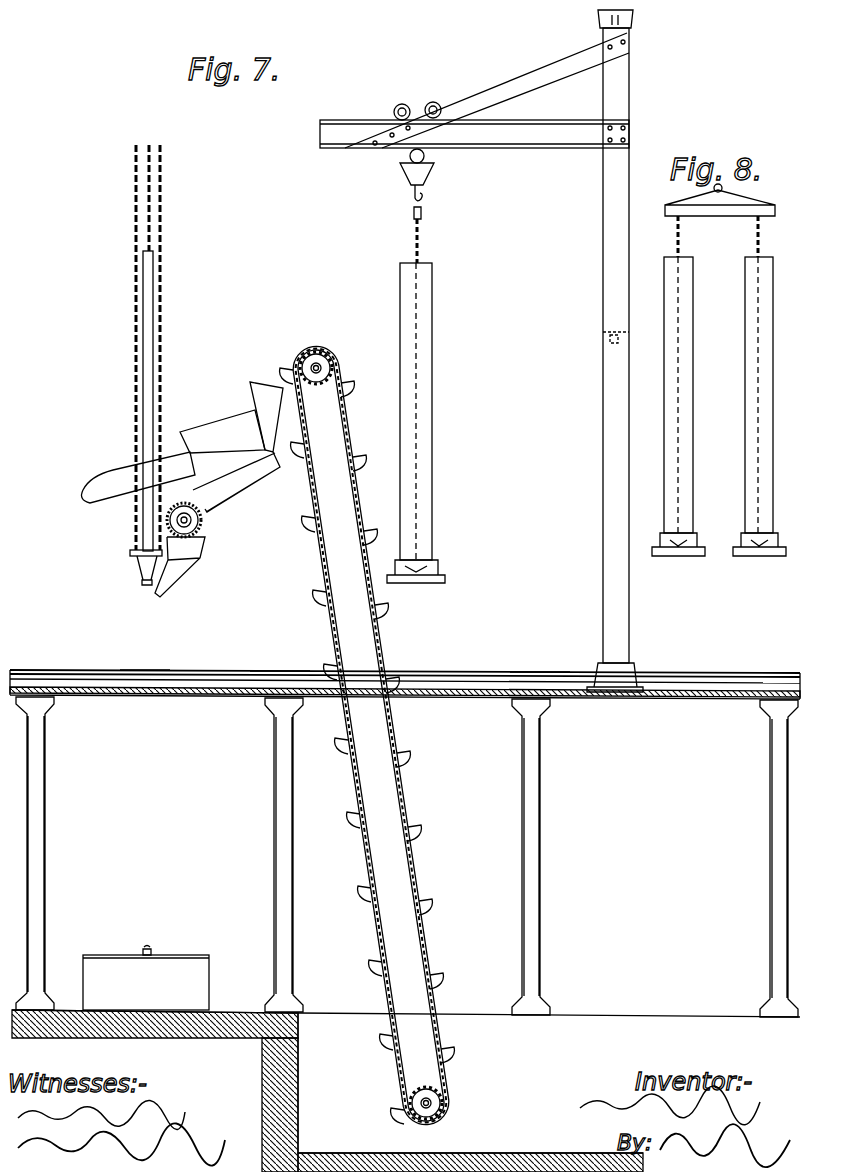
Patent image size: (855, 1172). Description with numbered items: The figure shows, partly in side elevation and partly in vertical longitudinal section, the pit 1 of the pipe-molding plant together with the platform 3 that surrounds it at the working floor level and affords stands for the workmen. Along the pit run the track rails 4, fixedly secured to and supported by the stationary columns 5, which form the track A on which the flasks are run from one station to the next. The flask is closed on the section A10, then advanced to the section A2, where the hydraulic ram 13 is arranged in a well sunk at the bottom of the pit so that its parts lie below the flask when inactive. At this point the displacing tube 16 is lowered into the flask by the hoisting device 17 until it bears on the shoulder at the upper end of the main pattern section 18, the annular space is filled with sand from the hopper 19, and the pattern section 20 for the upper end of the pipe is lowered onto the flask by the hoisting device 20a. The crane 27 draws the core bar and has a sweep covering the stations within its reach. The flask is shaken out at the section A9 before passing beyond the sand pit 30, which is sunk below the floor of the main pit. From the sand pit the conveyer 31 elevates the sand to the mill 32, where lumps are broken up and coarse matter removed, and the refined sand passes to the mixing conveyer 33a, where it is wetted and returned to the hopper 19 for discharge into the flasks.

The pit 1 is at (70, 990).
The platform 3 is at (163, 695).
The track rails 4 is at (245, 686).
The stationary columns 5 is at (44, 812).
The hydraulic ram 13 is at (199, 977).
The displacing tube 16 is at (152, 340).
The hoisting device 17 is at (151, 172).
The main pattern section 18 is at (152, 950).
The hopper 19 is at (180, 566).
The pattern section 20 is at (137, 563).
The hoisting device 20a is at (133, 392).
The crane 27 is at (608, 296).
The sand pit 30 is at (614, 1040).
The conveyer 31 is at (405, 803).
The mill 32 is at (217, 430).
The mixing conveyer 33a is at (201, 522).
The track A is at (48, 682).
The track section A2 is at (145, 656).
The track section A10 is at (280, 657).
The track section A9 is at (540, 659).